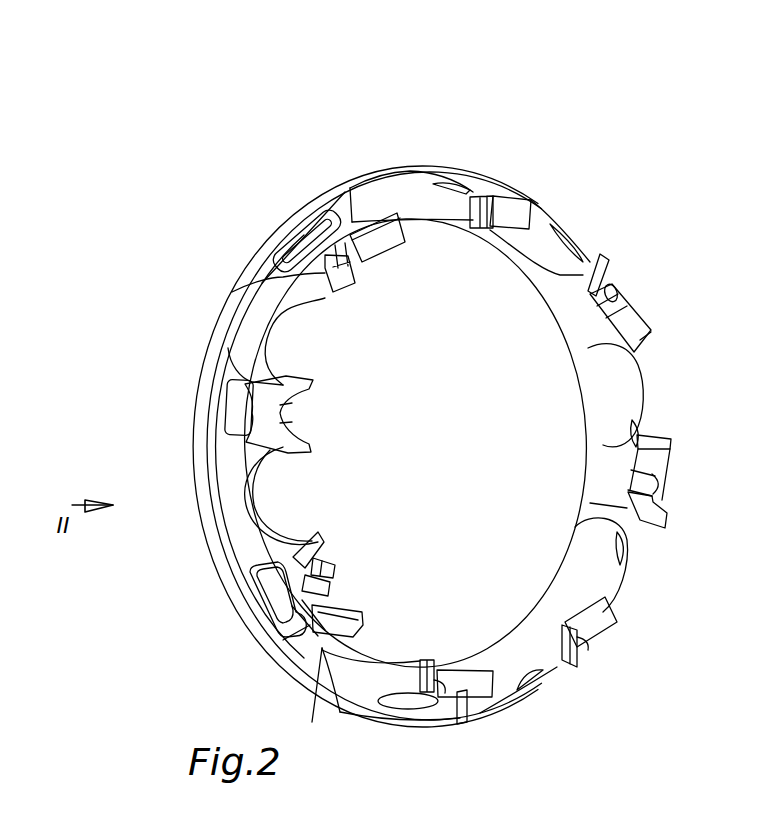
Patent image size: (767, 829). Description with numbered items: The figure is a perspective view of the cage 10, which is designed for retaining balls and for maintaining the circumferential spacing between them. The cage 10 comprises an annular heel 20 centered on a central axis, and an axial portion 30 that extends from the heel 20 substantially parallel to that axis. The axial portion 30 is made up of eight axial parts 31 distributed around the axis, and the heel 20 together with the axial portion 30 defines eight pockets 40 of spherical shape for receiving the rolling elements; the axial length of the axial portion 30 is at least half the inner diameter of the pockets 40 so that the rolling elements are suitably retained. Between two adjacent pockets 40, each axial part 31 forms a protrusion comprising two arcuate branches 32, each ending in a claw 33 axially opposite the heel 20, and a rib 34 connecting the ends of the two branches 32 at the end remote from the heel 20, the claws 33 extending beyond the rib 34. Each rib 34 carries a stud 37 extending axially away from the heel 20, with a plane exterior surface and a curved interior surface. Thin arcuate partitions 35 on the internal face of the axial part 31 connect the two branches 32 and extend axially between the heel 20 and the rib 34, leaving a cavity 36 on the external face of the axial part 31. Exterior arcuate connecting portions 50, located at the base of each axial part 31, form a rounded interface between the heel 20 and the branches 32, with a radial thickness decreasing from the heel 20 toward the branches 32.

The cage 10 is at (268, 128).
The annular heel 20 is at (279, 240).
The axial portion 30 is at (545, 180).
The axial part 31 is at (615, 290).
The arcuate branch 32 is at (250, 528).
The claw 33 is at (316, 545).
The rib 34 is at (327, 571).
The arcuate partition 35 is at (300, 607).
The cavity 36 is at (252, 589).
The stud 37 is at (323, 589).
The pocket 40 is at (633, 390).
The exterior arcuate connecting portion 50 is at (310, 625).